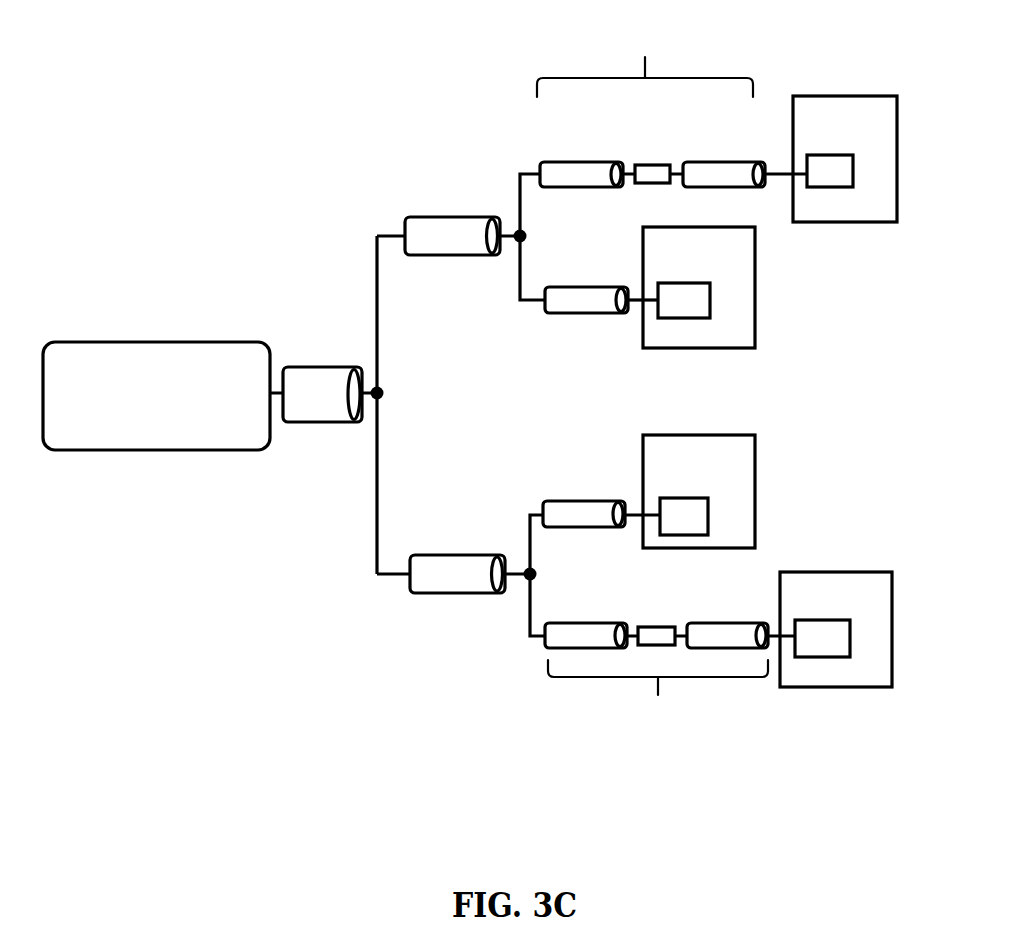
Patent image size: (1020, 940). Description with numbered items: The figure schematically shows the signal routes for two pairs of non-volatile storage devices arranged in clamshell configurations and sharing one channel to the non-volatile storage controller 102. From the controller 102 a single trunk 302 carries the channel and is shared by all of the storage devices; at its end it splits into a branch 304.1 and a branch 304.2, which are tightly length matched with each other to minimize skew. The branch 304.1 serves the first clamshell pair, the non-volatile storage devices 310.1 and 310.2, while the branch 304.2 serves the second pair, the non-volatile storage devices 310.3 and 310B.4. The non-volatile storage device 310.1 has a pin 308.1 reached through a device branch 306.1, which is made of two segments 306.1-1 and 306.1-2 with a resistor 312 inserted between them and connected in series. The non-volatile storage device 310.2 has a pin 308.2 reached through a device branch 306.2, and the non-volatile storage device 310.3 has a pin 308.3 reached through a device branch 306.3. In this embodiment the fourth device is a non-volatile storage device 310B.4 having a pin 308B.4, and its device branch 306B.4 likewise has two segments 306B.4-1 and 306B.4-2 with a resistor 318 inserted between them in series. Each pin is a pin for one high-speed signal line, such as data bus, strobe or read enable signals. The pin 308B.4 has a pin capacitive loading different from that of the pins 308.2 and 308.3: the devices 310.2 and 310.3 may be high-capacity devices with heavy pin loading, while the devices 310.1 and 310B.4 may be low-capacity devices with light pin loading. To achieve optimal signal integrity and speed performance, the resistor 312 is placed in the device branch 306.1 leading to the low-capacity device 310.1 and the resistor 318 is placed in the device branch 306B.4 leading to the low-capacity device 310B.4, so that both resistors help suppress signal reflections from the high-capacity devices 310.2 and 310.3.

The non-volatile storage controller 102 is at (195, 353).
The trunk 302 is at (308, 378).
The branch 304.1 is at (480, 187).
The branch 304.2 is at (480, 520).
The device branch 306.1 is at (672, 107).
The segment 306.1-1 is at (570, 160).
The segment 306.1-2 is at (762, 128).
The resistor 312 is at (660, 160).
The device branch 306.2 is at (560, 288).
The device branch 306.3 is at (556, 500).
The device branch 306B.4 is at (670, 645).
The segment 306B.4-1 is at (556, 620).
The segment 306B.4-2 is at (692, 620).
The resistor 318 is at (665, 624).
The pin 308.1 is at (828, 160).
The pin 308.2 is at (703, 264).
The pin 308.3 is at (700, 476).
The pin 308B.4 is at (833, 603).
The non-volatile storage device 310.1 is at (812, 98).
The non-volatile storage device 310.2 is at (670, 348).
The non-volatile storage device 310.3 is at (646, 435).
The non-volatile storage device 310B.4 is at (798, 687).